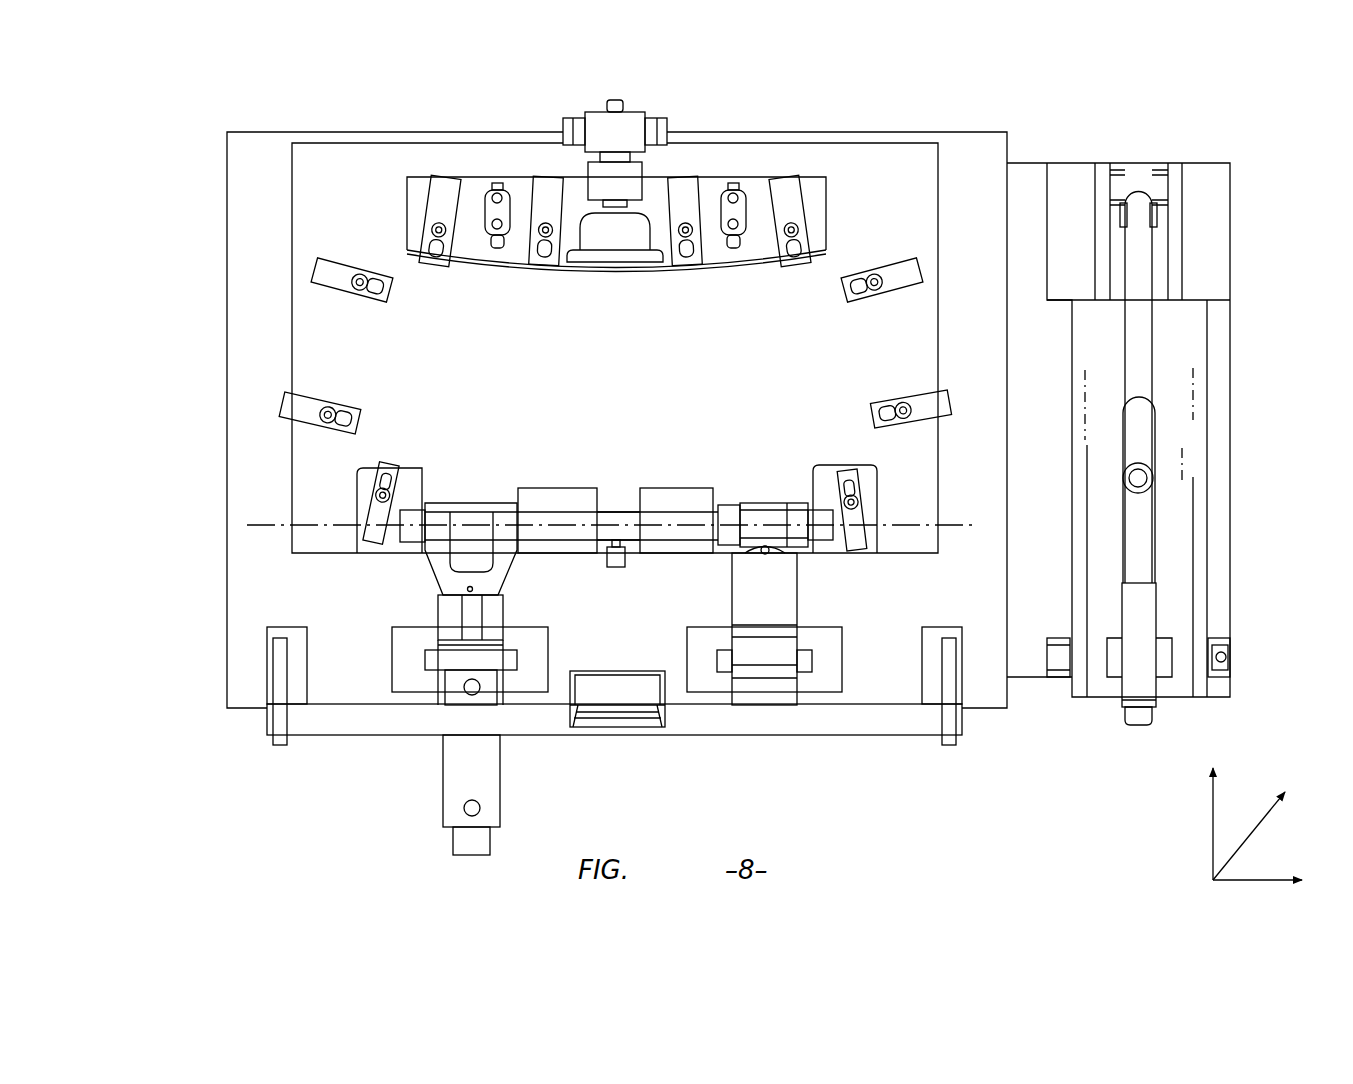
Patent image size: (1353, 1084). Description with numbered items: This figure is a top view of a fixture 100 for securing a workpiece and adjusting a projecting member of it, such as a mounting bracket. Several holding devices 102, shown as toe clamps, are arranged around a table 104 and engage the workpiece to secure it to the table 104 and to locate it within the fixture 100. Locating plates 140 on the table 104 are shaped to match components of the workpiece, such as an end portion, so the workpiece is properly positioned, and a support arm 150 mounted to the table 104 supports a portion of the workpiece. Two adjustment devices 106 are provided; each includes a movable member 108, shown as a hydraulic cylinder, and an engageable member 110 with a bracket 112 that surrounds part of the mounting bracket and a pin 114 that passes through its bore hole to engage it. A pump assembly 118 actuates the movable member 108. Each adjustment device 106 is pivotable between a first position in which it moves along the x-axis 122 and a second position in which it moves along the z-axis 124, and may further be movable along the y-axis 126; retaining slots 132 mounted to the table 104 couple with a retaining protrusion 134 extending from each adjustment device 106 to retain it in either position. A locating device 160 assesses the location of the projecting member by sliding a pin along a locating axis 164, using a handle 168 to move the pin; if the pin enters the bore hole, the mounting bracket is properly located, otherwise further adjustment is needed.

The fixture 100 is at (176, 241).
The holding device 102 is at (450, 187).
The table 104 is at (255, 148).
The adjustment device 106 is at (766, 566).
The movable member 108 is at (753, 556).
The engageable member 110 is at (432, 568).
The bracket 112 is at (437, 513).
The pin 114 is at (475, 518).
The pump assembly 118 is at (1170, 463).
The x-axis 122 is at (1212, 812).
The z-axis 124 is at (1257, 823).
The y-axis 126 is at (1257, 883).
The retaining slot 132 is at (513, 663).
The plate 134 is at (512, 659).
The locating plate 140 is at (758, 187).
The support arm 150 is at (885, 718).
The locating device 160 is at (620, 505).
The locating axis 164 is at (283, 525).
The handle 168 is at (613, 567).